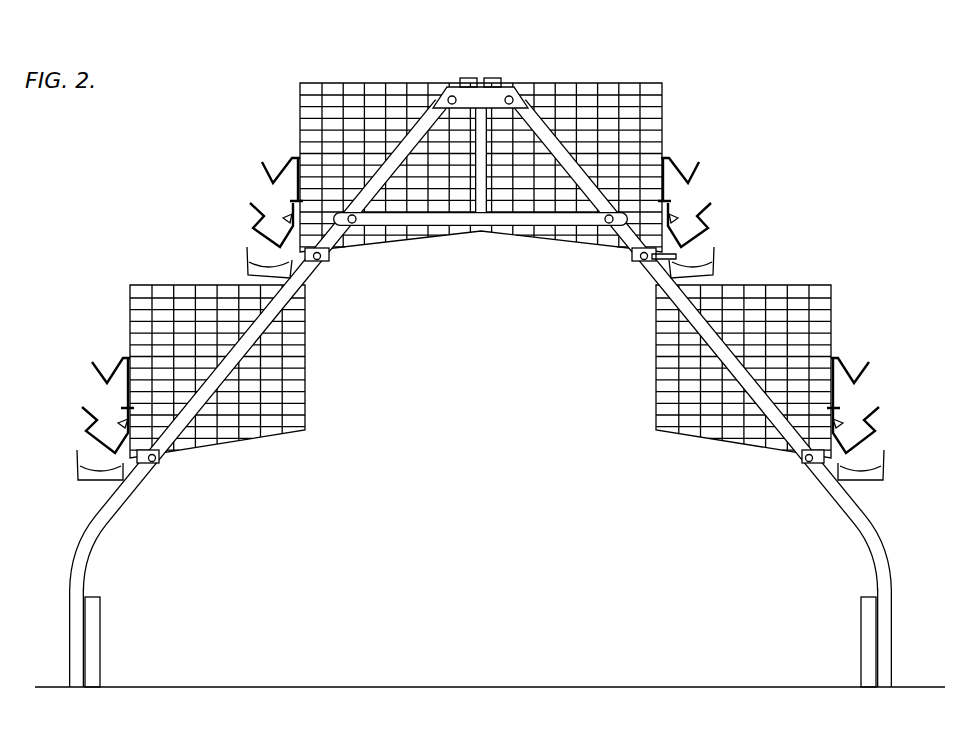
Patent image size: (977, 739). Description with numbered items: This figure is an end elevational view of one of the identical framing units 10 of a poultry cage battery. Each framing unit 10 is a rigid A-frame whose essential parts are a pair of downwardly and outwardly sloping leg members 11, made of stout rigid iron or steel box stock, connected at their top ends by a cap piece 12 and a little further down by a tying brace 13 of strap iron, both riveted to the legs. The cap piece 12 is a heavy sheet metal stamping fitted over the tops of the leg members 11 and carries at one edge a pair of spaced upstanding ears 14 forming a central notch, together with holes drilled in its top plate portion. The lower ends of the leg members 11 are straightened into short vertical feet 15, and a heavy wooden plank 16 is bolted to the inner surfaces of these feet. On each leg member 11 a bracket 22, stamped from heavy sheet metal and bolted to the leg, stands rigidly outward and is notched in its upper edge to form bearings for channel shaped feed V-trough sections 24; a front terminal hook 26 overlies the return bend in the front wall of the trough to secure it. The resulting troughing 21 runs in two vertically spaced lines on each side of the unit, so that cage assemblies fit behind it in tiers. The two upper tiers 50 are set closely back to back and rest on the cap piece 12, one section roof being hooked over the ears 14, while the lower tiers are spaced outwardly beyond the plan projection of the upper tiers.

The framing unit 10 is at (475, 395).
The leg member 11 is at (130, 503).
The cap piece 12 is at (477, 98).
The tying brace 13 is at (481, 224).
The upstanding ears 14 is at (466, 77).
The vertical feet 15 is at (68, 628).
The wooden plank 16 is at (100, 628).
The troughing 21 is at (252, 209).
The bracket 22 is at (257, 231).
The feed V-trough section 24 is at (707, 239).
The front terminal hook 26 is at (251, 224).
The upper tier 50 is at (292, 110).